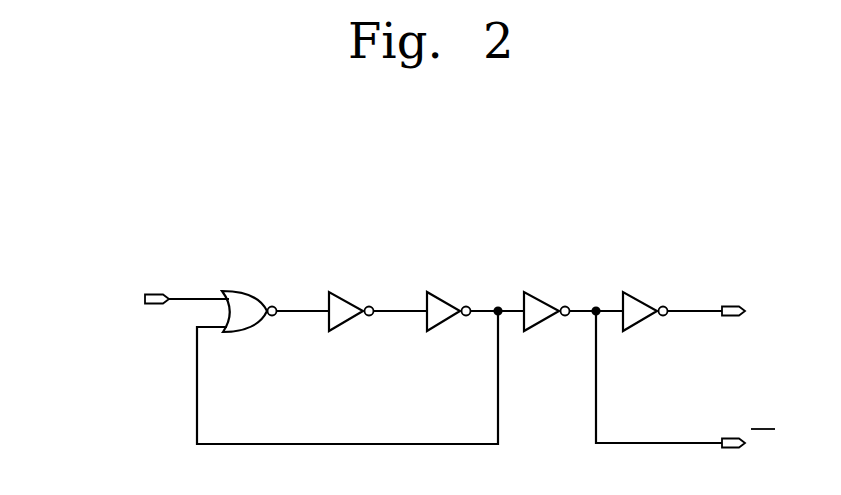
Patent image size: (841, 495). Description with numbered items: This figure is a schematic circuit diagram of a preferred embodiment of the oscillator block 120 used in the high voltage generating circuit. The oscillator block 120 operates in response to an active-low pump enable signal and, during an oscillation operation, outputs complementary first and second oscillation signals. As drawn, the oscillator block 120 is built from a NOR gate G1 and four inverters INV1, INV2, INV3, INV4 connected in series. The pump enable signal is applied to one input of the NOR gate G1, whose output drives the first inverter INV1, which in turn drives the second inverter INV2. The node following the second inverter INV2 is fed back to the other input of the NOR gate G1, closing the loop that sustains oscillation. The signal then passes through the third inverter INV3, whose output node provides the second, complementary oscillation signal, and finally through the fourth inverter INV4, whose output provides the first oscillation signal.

The oscillator block 120 is at (720, 190).
The NOR gate G1 is at (240, 291).
The first inverter INV1 is at (372, 275).
The second inverter INV2 is at (470, 275).
The third inverter INV3 is at (567, 275).
The fourth inverter INV4 is at (665, 275).